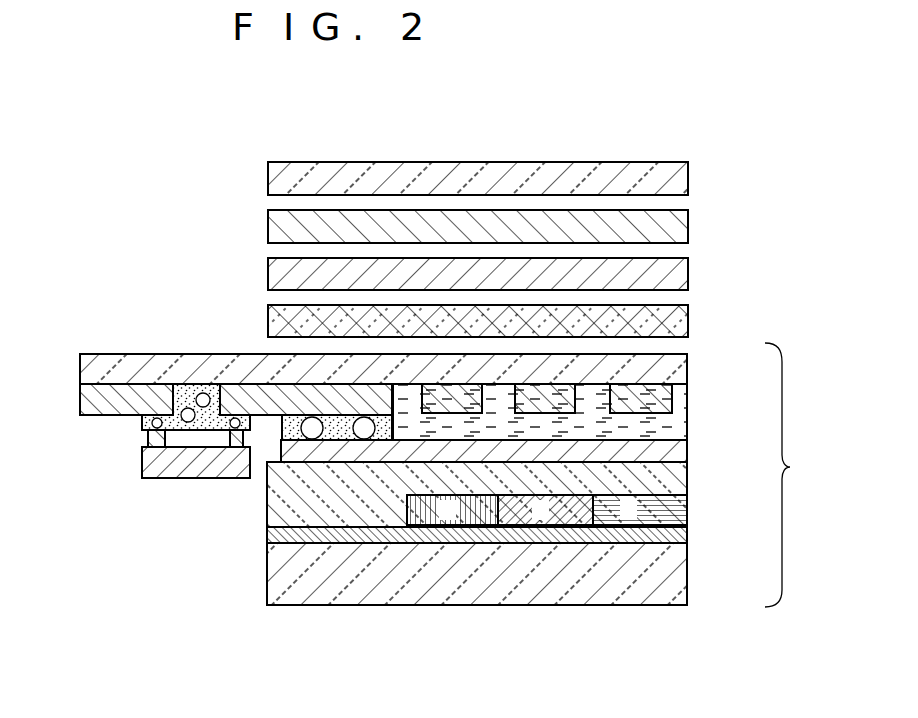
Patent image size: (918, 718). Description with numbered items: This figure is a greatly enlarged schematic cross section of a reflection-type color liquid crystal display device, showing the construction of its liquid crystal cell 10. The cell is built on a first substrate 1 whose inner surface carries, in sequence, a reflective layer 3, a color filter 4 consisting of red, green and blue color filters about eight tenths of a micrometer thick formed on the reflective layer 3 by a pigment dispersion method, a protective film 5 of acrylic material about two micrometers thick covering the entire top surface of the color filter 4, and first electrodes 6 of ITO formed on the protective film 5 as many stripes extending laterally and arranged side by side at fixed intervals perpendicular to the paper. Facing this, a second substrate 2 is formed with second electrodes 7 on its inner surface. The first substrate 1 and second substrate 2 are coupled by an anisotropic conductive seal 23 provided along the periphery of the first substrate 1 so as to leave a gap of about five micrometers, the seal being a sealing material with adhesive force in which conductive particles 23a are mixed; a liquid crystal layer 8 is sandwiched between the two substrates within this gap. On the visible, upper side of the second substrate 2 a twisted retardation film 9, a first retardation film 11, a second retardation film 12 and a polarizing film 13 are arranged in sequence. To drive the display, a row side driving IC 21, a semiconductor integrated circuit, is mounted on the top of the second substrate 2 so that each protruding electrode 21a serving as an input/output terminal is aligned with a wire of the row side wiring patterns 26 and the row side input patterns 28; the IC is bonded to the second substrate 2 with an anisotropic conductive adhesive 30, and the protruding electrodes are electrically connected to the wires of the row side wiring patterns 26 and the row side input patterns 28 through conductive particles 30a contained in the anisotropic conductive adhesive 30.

The first substrate 1 is at (670, 587).
The second substrate 2 is at (683, 370).
The reflective layer 3 is at (682, 537).
The color filter 4 is at (677, 517).
The protective film 5 is at (672, 482).
The first electrodes 6 is at (678, 453).
The second electrodes 7 is at (660, 400).
The liquid crystal layer 8 is at (668, 423).
The twisted retardation film 9 is at (681, 325).
The liquid crystal cell 10 is at (819, 486).
The first retardation film 11 is at (677, 275).
The second retardation film 12 is at (677, 228).
The polarizing film 13 is at (674, 178).
The row side driving IC 21 is at (187, 472).
The protruding electrode 21a is at (148, 442).
The anisotropic conductive seal 23 is at (333, 443).
The conductive particles 23a is at (363, 442).
The row side wiring patterns 26 is at (274, 417).
The row side input patterns 28 is at (93, 410).
The anisotropic conductive adhesive 30 is at (212, 410).
The conductive particles 30a is at (187, 411).